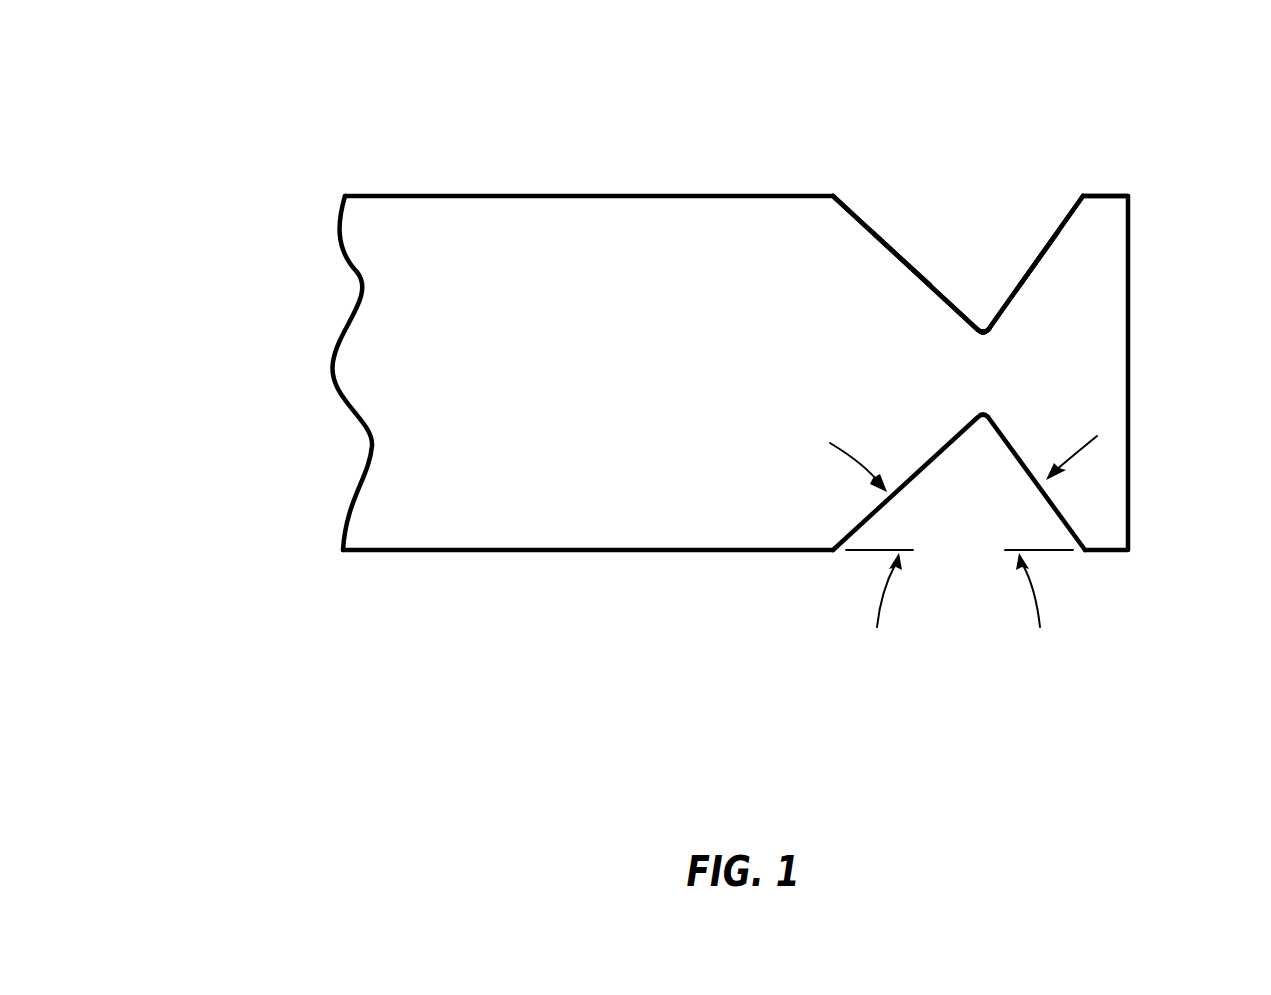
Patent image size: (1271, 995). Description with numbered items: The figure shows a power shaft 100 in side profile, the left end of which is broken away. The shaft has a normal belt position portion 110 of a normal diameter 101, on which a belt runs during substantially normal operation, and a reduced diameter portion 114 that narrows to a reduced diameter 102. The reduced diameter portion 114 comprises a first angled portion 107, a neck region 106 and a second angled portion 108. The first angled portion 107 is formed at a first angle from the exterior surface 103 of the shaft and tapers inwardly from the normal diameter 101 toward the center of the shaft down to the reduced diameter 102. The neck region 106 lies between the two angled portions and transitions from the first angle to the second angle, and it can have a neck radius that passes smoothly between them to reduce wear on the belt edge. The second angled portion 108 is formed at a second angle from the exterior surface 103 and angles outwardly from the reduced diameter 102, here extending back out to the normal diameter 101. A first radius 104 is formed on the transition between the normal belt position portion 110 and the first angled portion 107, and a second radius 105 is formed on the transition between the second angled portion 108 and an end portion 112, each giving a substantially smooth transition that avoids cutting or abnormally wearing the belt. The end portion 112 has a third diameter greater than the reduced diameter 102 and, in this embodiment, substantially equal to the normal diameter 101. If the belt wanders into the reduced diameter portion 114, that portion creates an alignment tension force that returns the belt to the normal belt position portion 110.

The power shaft 100 is at (511, 676).
The normal diameter 101 is at (283, 551).
The reduced diameter 102 is at (1030, 332).
The exterior surface 103 is at (413, 552).
The first radius 104 is at (835, 195).
The second radius 105 is at (1082, 198).
The neck region 106 is at (986, 332).
The first angled portion 107 is at (904, 264).
The second angled portion 108 is at (1060, 246).
The normal belt position portion 110 is at (825, 141).
The end portion 112 is at (1072, 141).
The reduced diameter portion 114 is at (858, 70).